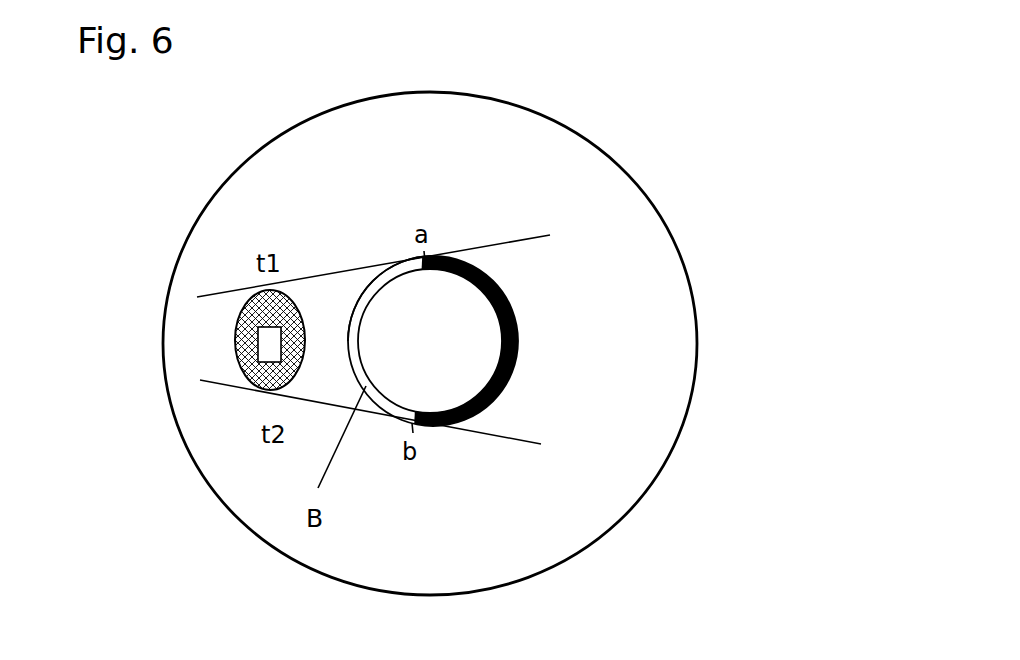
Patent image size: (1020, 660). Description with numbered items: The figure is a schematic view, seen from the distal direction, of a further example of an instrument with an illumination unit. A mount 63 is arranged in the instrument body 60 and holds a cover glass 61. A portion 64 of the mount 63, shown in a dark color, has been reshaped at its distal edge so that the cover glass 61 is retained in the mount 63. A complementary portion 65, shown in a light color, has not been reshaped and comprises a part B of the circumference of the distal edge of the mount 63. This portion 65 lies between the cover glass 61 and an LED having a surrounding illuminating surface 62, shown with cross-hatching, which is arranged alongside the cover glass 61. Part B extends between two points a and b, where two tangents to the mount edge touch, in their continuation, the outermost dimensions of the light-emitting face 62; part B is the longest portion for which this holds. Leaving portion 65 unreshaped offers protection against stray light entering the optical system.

The instrument body 60 is at (700, 152).
The cover glass 61 is at (443, 356).
The illuminating surface 62 is at (250, 324).
The mount 63 is at (505, 301).
The portion 64 is at (516, 331).
The complementary portion 65 is at (368, 283).